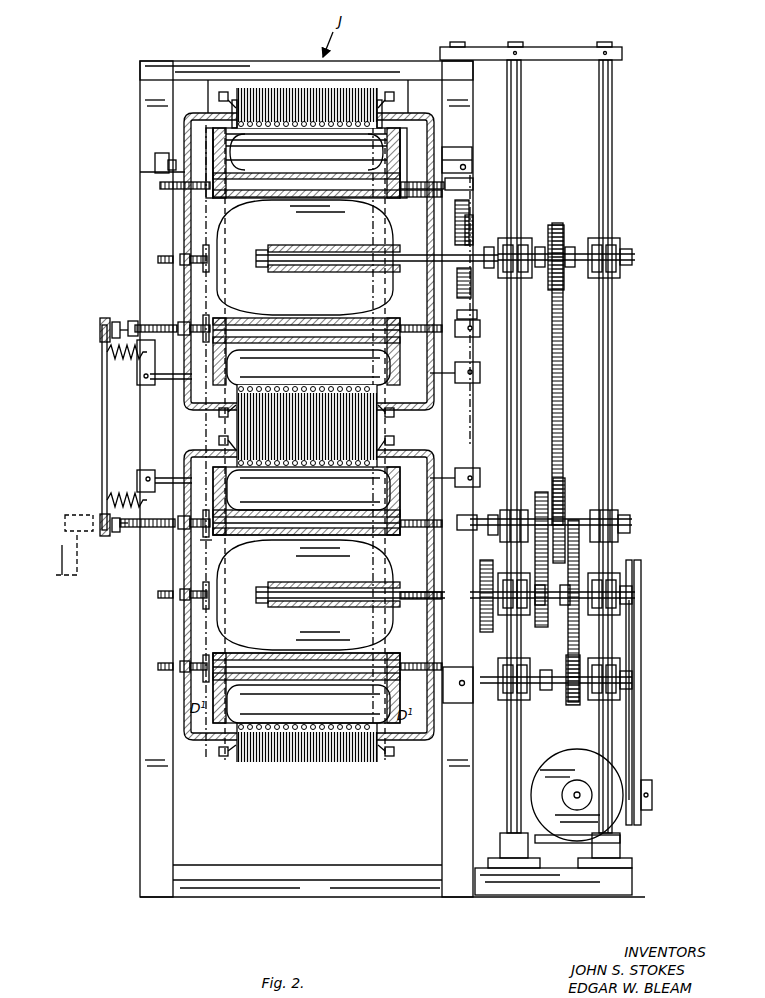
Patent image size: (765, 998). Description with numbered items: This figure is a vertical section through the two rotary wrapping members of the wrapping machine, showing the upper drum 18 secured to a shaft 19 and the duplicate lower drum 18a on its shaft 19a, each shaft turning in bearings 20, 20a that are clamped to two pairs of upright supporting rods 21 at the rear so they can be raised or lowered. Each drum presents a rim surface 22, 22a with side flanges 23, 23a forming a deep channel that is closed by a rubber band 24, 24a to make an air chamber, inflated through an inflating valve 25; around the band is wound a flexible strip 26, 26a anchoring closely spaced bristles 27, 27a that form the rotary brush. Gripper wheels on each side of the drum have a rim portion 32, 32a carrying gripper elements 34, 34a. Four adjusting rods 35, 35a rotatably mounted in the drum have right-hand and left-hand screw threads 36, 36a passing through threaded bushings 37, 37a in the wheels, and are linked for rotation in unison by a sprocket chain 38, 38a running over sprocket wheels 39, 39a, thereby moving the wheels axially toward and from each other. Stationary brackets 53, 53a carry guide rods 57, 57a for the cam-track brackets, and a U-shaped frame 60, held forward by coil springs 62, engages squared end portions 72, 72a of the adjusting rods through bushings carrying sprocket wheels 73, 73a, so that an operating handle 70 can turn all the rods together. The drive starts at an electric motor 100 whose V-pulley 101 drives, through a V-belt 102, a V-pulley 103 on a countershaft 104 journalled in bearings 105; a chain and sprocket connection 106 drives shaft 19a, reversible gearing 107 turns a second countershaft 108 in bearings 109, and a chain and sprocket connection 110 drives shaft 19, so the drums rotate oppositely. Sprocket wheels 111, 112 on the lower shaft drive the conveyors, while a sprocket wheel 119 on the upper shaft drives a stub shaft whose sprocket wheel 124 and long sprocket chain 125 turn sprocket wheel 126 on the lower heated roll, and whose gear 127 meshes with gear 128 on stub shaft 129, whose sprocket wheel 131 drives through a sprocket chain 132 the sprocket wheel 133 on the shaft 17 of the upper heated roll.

The shaft of the upper heated roll 17 is at (160, 185).
The drum 18 is at (320, 273).
The shaft 19 is at (346, 262).
The shaft 19a is at (330, 590).
The lower drum 18a is at (280, 590).
The bearings 20 is at (600, 238).
The bearings 20a is at (592, 612).
The upright supporting rods 21 is at (514, 422).
The rim surface 22 is at (282, 198).
The rim surface 22a is at (256, 679).
The side flanges 23 is at (175, 180).
The side flanges 23a is at (392, 690).
The rubber band 24 is at (308, 128).
The rubber band 24a is at (320, 720).
The inflating valve 25 is at (160, 168).
The flexible strip 26 is at (345, 128).
The flexible strip 26a is at (272, 745).
The bristles 27 is at (345, 90).
The bristles 27a is at (380, 466).
The rim portion 32 is at (190, 404).
The rim portion 32a is at (190, 453).
The gripper elements 34 is at (218, 414).
The gripper elements 34a is at (218, 441).
The adjusting rods 35 is at (318, 200).
The adjusting rods 35a is at (292, 527).
The screw threads 36 is at (180, 192).
The screw threads 36a is at (158, 595).
The threaded bushings 37 is at (185, 252).
The threaded bushings 37a is at (152, 528).
The sprocket chain 38 is at (210, 292).
The sprocket chain 38a is at (205, 552).
The sprocket wheels 39 is at (236, 172).
The sprocket wheels 39a is at (230, 512).
The stationary brackets 53 is at (134, 362).
The stationary brackets 53a is at (147, 490).
The guide rods 57 is at (163, 381).
The guide rods 57a is at (450, 476).
The U-shaped frame 60 is at (101, 417).
The coil springs 62 is at (115, 360).
The operating handle 70 is at (60, 575).
The squared end portion 72 is at (124, 322).
The squared end portion 72a is at (115, 530).
The sprocket wheel 73 is at (114, 320).
The sprocket wheel 73a is at (100, 522).
The electric motor 100 is at (574, 755).
The V-pulley 101 is at (650, 785).
The V-belt 102 is at (641, 720).
The V-pulley 103 is at (642, 655).
The countershaft 104 is at (545, 676).
The bearings 105 is at (538, 692).
The chain and sprocket connection 106 is at (634, 644).
The reversible gearing 107 is at (548, 537).
The countershaft 108 is at (573, 520).
The bearings 109 is at (614, 525).
The chain and sprocket connection 110 is at (563, 365).
The sprocket wheel 111 is at (482, 578).
The sprocket wheel 112 is at (505, 615).
The sprocket wheel 119 is at (468, 292).
The sprocket wheel 124 is at (467, 303).
The sprocket chain 125 is at (470, 318).
The sprocket wheel 126 is at (472, 703).
The gear 127 is at (442, 264).
The gear 128 is at (468, 215).
The stub shaft 129 is at (472, 228).
The sprocket wheel 131 is at (515, 238).
The sprocket chain 132 is at (470, 190).
The sprocket wheel 133 is at (470, 160).